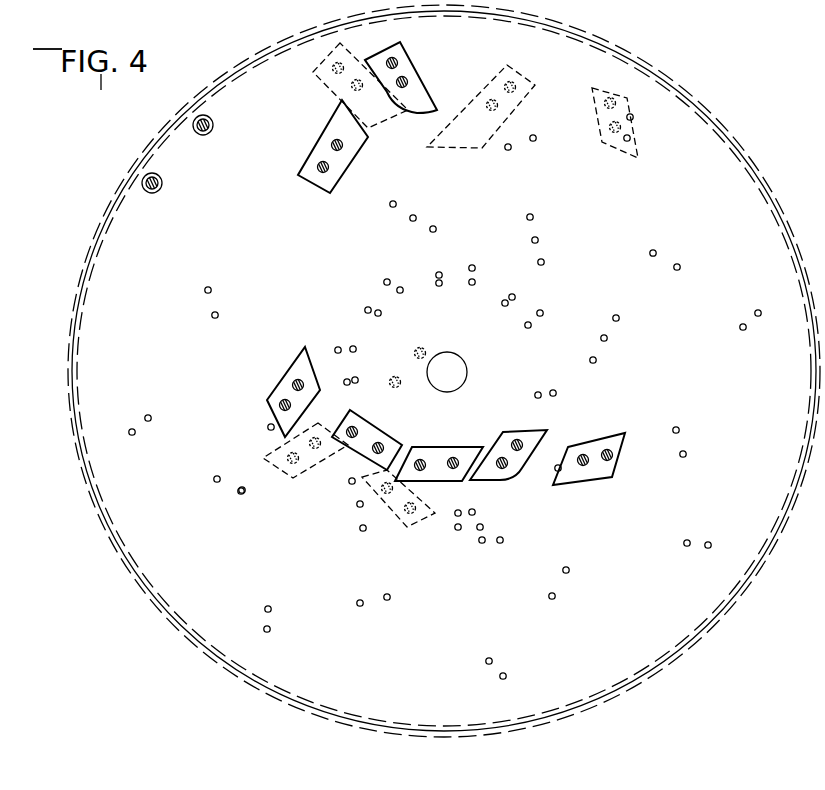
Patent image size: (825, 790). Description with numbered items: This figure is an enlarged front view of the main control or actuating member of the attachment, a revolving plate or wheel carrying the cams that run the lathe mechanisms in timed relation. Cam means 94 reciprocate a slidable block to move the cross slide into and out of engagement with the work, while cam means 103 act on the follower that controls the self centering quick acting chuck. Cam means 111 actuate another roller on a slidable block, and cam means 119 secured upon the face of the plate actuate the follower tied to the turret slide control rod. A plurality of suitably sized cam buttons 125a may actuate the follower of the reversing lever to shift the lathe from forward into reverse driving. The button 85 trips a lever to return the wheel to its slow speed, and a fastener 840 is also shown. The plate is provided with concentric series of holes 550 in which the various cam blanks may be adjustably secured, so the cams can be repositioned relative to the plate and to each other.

The button 85 is at (212, 132).
The fastener 840 is at (162, 188).
The cam means 111 is at (325, 87).
The cam means 94 is at (413, 113).
The cam means 103 is at (291, 363).
The cam means 119 is at (382, 504).
The cam buttons 125a is at (440, 309).
The holes 550 is at (205, 291).